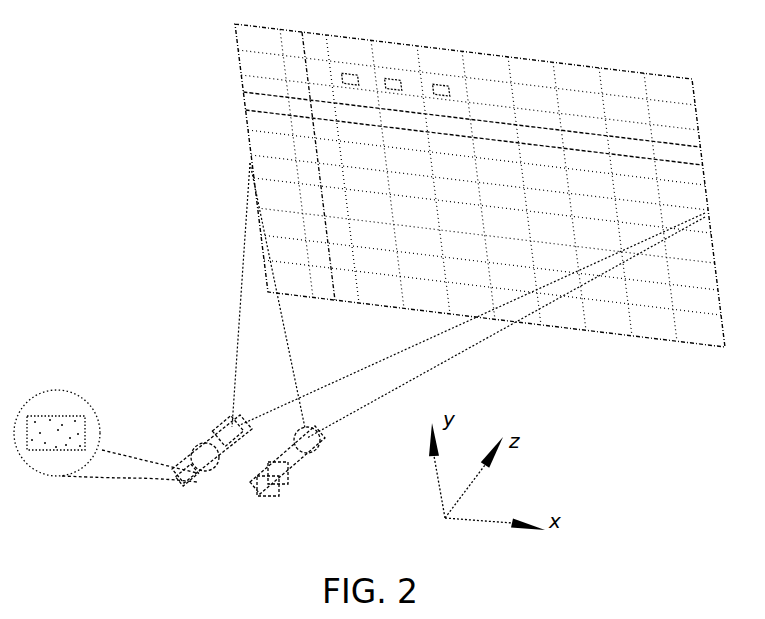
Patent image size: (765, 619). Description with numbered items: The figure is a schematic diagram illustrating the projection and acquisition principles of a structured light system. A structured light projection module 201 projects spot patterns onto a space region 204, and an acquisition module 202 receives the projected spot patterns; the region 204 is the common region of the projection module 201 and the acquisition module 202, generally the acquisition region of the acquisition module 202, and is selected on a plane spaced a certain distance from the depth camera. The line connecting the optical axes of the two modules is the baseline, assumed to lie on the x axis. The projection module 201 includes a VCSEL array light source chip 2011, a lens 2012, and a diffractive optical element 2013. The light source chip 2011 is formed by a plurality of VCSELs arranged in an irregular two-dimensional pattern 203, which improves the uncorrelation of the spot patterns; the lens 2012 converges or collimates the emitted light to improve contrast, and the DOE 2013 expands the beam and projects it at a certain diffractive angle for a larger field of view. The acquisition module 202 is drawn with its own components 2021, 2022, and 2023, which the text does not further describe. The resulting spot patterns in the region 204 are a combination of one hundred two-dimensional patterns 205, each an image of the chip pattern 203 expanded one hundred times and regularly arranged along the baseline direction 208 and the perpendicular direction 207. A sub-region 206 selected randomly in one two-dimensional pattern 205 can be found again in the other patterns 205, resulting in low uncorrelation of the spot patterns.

The structured light projection module 201 is at (210, 480).
The VCSEL array light source chip 2011 is at (184, 468).
The lens 2012 is at (210, 445).
The diffractive optical element 2013 is at (214, 414).
The acquisition module 202 is at (258, 477).
The first module of second device 2021 is at (272, 496).
The second module of second device 2022 is at (285, 473).
The camera of second device 2023 is at (308, 449).
The two-dimensional patterns 203 is at (67, 396).
The space region 204 is at (249, 142).
The two-dimensional patterns 205 is at (607, 320).
The sub-region 206 is at (450, 91).
The direction perpendicular to the baseline 207 is at (308, 77).
The baseline direction 208 is at (673, 147).